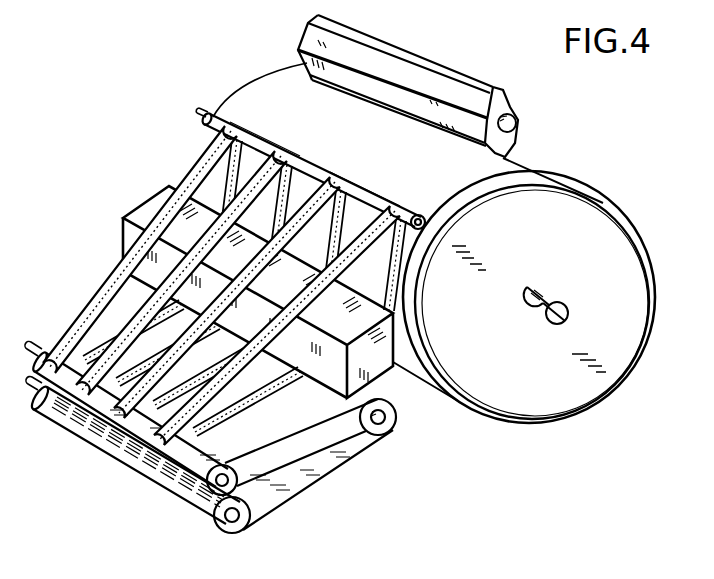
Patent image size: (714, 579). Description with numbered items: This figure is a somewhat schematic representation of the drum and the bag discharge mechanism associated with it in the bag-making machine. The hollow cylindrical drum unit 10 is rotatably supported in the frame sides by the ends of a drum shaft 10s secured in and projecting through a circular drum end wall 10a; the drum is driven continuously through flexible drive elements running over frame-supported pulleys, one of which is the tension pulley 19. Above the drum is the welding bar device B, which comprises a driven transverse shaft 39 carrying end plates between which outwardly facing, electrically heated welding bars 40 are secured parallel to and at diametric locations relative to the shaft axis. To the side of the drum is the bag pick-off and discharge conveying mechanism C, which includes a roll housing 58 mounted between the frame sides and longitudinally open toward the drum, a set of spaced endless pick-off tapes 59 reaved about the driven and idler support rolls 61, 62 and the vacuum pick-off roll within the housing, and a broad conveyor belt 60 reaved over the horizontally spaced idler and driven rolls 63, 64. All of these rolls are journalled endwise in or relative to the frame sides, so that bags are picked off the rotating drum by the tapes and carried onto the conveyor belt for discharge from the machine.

The tension pulley 19 is at (125, 16).
The hollow cylindrical drum unit 10 is at (548, 212).
The circular drum end wall 10a is at (552, 267).
The drum shaft 10s is at (558, 304).
The welding bar device B is at (457, 50).
The electrically heated welding bar 40 is at (483, 70).
The driven transverse shaft 39 is at (512, 115).
The bag pick-off and discharge conveying mechanism C is at (84, 218).
The roll housing 58 is at (372, 370).
The idler support roll 62 is at (212, 118).
The pick-off tapes 59 is at (307, 164).
The driven support roll 61 is at (46, 352).
The driven roll 64 is at (243, 511).
The idler roll 63 is at (370, 428).
The conveyor belt 60 is at (317, 472).